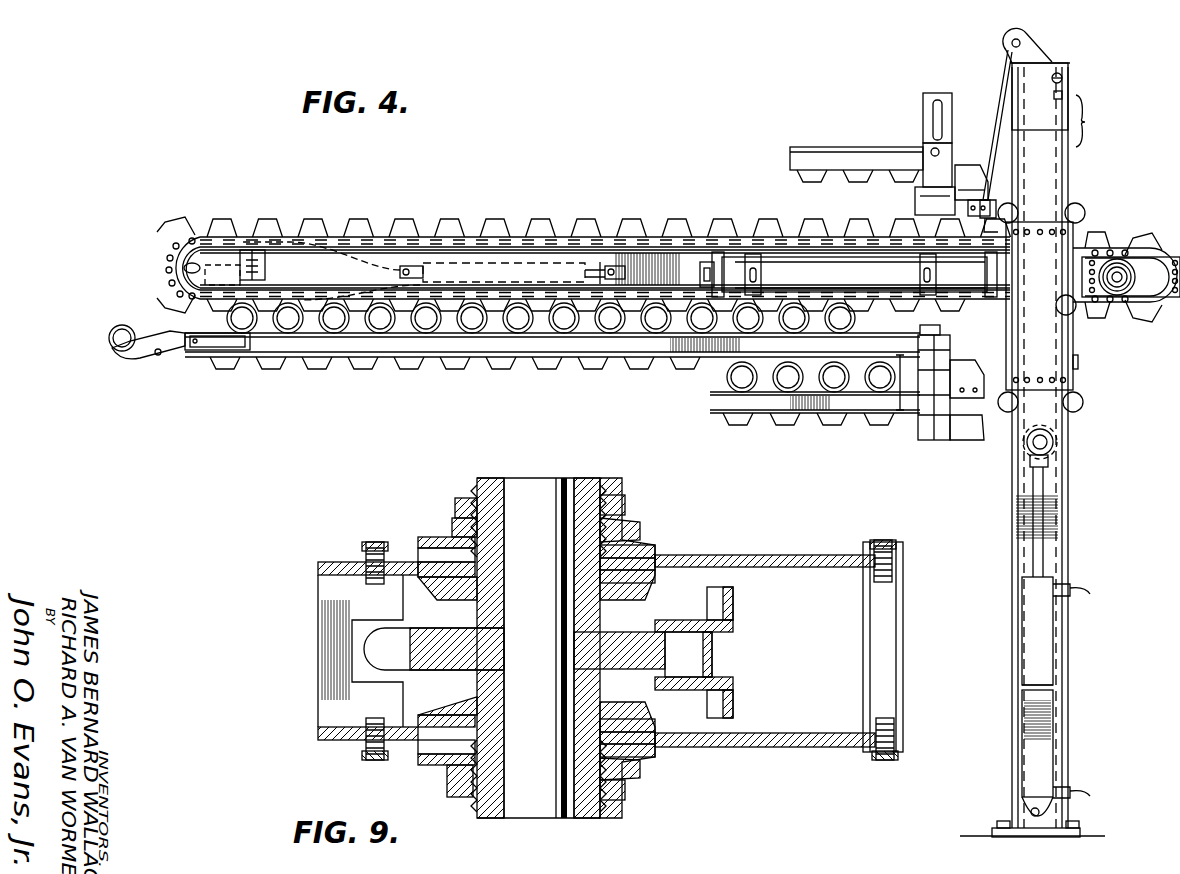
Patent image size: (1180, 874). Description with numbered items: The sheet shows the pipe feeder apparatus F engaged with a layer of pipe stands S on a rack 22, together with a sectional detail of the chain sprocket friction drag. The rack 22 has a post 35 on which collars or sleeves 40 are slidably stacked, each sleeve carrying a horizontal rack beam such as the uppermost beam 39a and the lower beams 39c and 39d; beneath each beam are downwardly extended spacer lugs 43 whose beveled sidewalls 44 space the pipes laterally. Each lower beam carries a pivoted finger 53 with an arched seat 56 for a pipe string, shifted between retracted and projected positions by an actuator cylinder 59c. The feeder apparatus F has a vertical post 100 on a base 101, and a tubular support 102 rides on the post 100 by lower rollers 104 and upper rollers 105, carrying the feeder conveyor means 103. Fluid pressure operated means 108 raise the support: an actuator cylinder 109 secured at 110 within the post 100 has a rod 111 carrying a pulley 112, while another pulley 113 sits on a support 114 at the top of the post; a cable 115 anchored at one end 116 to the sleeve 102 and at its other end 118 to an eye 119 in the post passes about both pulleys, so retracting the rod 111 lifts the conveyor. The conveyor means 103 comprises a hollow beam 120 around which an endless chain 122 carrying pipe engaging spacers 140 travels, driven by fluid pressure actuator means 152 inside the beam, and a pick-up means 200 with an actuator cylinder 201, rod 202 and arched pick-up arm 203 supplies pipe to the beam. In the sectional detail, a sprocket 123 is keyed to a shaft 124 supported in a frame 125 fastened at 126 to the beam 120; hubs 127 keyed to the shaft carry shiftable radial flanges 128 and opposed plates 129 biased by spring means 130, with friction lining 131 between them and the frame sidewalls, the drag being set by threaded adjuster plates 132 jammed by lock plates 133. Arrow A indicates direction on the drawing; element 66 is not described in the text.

In FIG. 4, the rack 22 is at (915, 107).
In FIG. 4, the post 35 is at (923, 124).
In FIG. 4, the rack beam 39a is at (795, 157).
In FIG. 4, the rack beam 39c is at (548, 345).
In FIG. 4, the rack beam 39d is at (868, 408).
In FIG. 4, the collar or sleeve 40 is at (950, 160).
In FIG. 4, the spacer lug 43 is at (658, 362).
In FIG. 4, the beveled sidewall 44 is at (470, 366).
In FIG. 4, the finger 53 is at (140, 353).
In FIG. 4, the seat 56 is at (110, 338).
In FIG. 4, the actuator cylinder 59c is at (207, 342).
In FIG. 4, the side plate 66 is at (968, 432).
In FIG. 4, the vertical post 100 is at (1068, 162).
In FIG. 4, the base 101 is at (995, 825).
In FIG. 4, the tubular support 102 is at (1075, 345).
In FIG. 4, the feeder conveyor means 103 is at (1113, 239).
In FIG. 4, the lower rollers 104 is at (1085, 402).
In FIG. 4, the upper rollers 105 is at (1084, 210).
In FIG. 4, the fluid pressure operated means 108 is at (1060, 562).
In FIG. 4, the actuator cylinder 109 is at (1056, 702).
In FIG. 4, the securing point 110 is at (1033, 816).
In FIG. 4, the rod 111 is at (1044, 485).
In FIG. 4, the pulley 112 is at (1053, 438).
In FIG. 4, the pulley 113 is at (1030, 35).
In FIG. 4, the support 114 is at (1012, 50).
In FIG. 4, the cable 115 is at (1003, 95).
In FIG. 4, the cable end 116 is at (968, 217).
In FIG. 4, the cable end 118 is at (1060, 95).
In FIG. 4, the eye 119 is at (1065, 78).
In FIG. 4, the hollow beam 120 is at (322, 268).
In FIG. 9, the hollow beam 120 is at (318, 572).
In FIG. 4, the endless chain 122 is at (462, 240).
In FIG. 9, the endless chain 122 is at (733, 607).
In FIG. 9, the sprocket 123 is at (457, 622).
In FIG. 9, the shaft 124 is at (538, 488).
In FIG. 9, the frame 125 is at (765, 560).
In FIG. 9, the fastening 126 is at (368, 542).
In FIG. 9, the hub 127 is at (592, 488).
In FIG. 9, the radial flange 128 is at (622, 588).
In FIG. 9, the shiftable plate 129 is at (650, 555).
In FIG. 9, the spring means 130 is at (620, 540).
In FIG. 9, the friction lining material 131 is at (480, 579).
In FIG. 9, the adjuster plate 132 is at (458, 524).
In FIG. 9, the lock plate 133 is at (462, 498).
In FIG. 4, the pipe engaging lug or spacer 140 is at (675, 230).
In FIG. 4, the fluid pressure actuator means 152 is at (835, 260).
In FIG. 4, the pick-up means 200 is at (215, 262).
In FIG. 4, the actuator cylinder 201 is at (553, 260).
In FIG. 4, the rod 202 is at (417, 265).
In FIG. 4, the pick-up arm 203 is at (376, 258).
In FIG. 4, the direction arrow A is at (692, 150).
In FIG. 4, the feeder apparatus F is at (1102, 181).
In FIG. 4, the pipe stand S is at (728, 377).